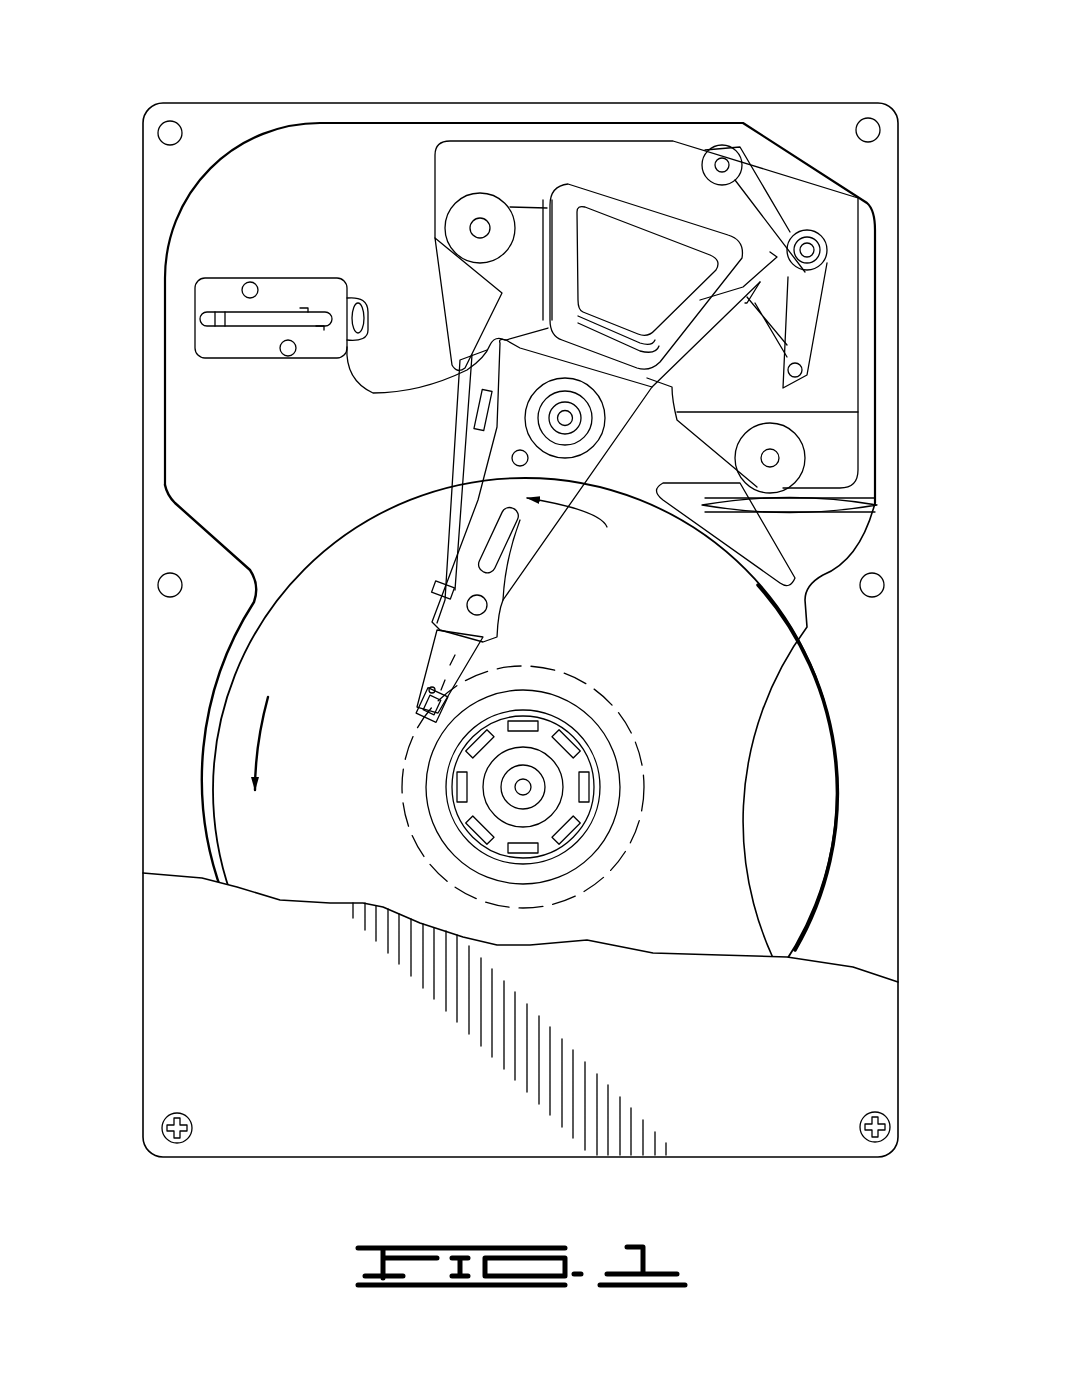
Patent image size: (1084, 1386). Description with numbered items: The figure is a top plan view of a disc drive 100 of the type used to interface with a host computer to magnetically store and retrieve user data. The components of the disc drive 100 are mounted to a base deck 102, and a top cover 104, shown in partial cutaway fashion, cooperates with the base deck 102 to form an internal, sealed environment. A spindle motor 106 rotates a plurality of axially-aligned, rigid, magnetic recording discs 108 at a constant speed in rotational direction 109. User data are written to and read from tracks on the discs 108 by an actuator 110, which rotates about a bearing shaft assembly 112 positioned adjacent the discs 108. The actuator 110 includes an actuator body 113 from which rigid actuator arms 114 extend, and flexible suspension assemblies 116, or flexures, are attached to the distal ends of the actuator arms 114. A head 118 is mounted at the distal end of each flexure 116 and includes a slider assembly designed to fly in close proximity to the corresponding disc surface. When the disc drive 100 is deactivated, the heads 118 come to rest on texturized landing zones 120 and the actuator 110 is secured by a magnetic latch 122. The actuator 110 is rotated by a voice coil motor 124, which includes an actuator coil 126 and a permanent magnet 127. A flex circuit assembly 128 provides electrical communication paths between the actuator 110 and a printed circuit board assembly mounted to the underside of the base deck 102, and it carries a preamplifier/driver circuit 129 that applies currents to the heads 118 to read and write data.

The disc drive 100 is at (253, 62).
The base deck 102 is at (205, 440).
The top cover 104 is at (200, 950).
The spindle motor 106 is at (580, 765).
The discs 108 is at (810, 800).
The rotational direction 109 is at (260, 738).
The actuator 110 is at (550, 477).
The bearing shaft assembly 112 is at (570, 433).
The actuator body 113 is at (588, 520).
The actuator arms 114 is at (528, 552).
The flexible suspension assemblies 116 is at (445, 655).
The head 118 is at (430, 695).
The texturized landing zones 120 is at (600, 690).
The magnetic latch 122 is at (752, 185).
The voice coil motor 124 is at (590, 162).
The actuator coil 126 is at (693, 305).
The permanent magnet 127 is at (747, 395).
The flex circuit assembly 128 is at (397, 383).
The preamplifier/driver circuit 129 is at (477, 408).